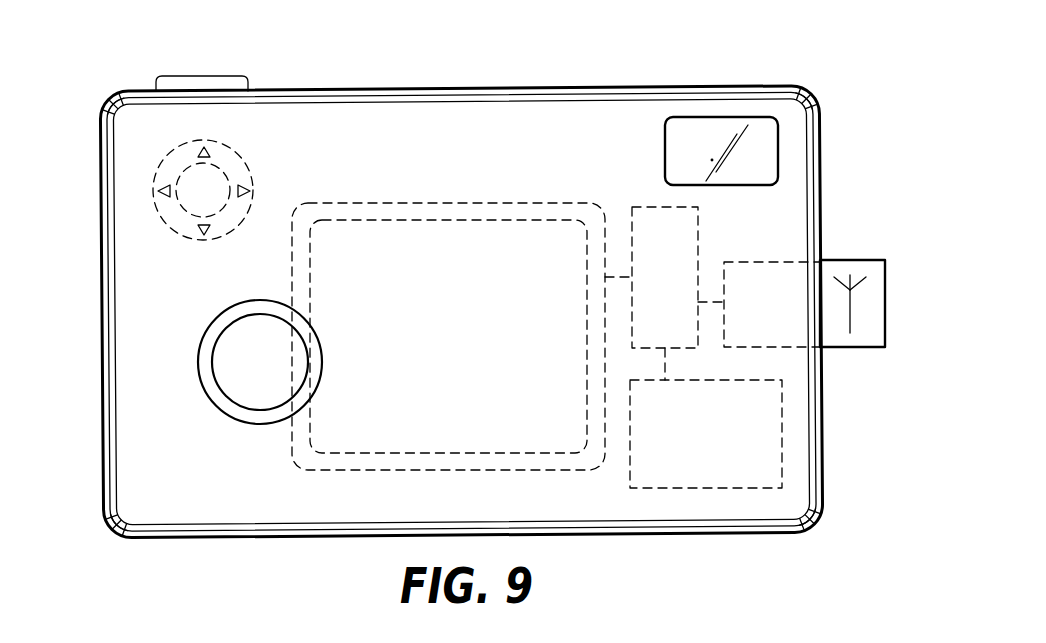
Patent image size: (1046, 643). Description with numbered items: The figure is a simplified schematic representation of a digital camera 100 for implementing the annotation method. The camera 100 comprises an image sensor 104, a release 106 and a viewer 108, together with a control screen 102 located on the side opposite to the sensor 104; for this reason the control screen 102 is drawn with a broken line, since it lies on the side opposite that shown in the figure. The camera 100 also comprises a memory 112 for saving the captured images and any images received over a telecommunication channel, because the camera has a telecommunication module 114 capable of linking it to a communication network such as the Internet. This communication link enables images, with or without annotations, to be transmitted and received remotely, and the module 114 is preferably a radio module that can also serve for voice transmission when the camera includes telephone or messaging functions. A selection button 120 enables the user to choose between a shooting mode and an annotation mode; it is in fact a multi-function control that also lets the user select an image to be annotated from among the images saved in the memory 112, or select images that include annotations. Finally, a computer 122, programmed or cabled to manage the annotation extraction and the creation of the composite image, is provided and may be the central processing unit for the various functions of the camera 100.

The digital camera 100 is at (815, 50).
The control screen 102 is at (403, 203).
The image sensor 104 is at (198, 368).
The release 106 is at (197, 77).
The viewer 108 is at (707, 135).
The memory 112 is at (782, 449).
The telecommunication module 114 is at (860, 348).
The selection button 120 is at (160, 167).
The computer 122 is at (699, 222).